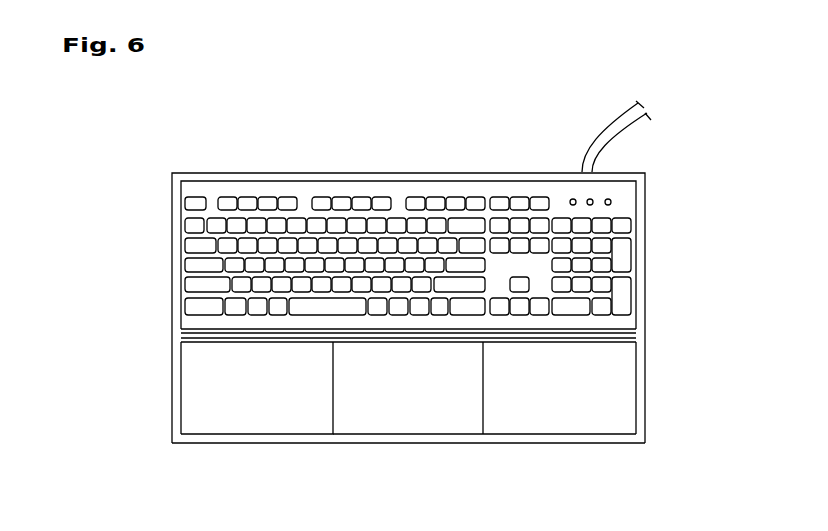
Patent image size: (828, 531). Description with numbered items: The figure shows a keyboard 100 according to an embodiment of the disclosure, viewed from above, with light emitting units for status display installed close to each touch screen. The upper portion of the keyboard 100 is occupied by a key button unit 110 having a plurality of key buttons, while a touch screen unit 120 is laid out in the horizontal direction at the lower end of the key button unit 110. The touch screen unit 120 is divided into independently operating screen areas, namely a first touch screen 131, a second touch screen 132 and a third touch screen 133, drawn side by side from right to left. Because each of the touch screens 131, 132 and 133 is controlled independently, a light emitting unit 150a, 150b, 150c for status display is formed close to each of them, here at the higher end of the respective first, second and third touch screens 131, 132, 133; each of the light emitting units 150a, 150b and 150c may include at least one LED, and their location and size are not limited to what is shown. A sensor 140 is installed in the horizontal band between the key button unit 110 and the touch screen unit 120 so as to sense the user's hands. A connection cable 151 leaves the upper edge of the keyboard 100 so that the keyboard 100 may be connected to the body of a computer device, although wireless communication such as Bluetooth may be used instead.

The keyboard 100 is at (150, 170).
The key button unit 110 is at (190, 258).
The touch screen unit 120 is at (172, 379).
The first touch screen 131 is at (555, 429).
The second touch screen 132 is at (407, 428).
The third touch screen 133 is at (272, 430).
The sensor 140 is at (183, 336).
The light emitting unit for status display 150a is at (555, 343).
The light emitting unit for status display 150b is at (405, 343).
The light emitting unit for status display 150c is at (248, 343).
The connection cable 151 is at (593, 145).